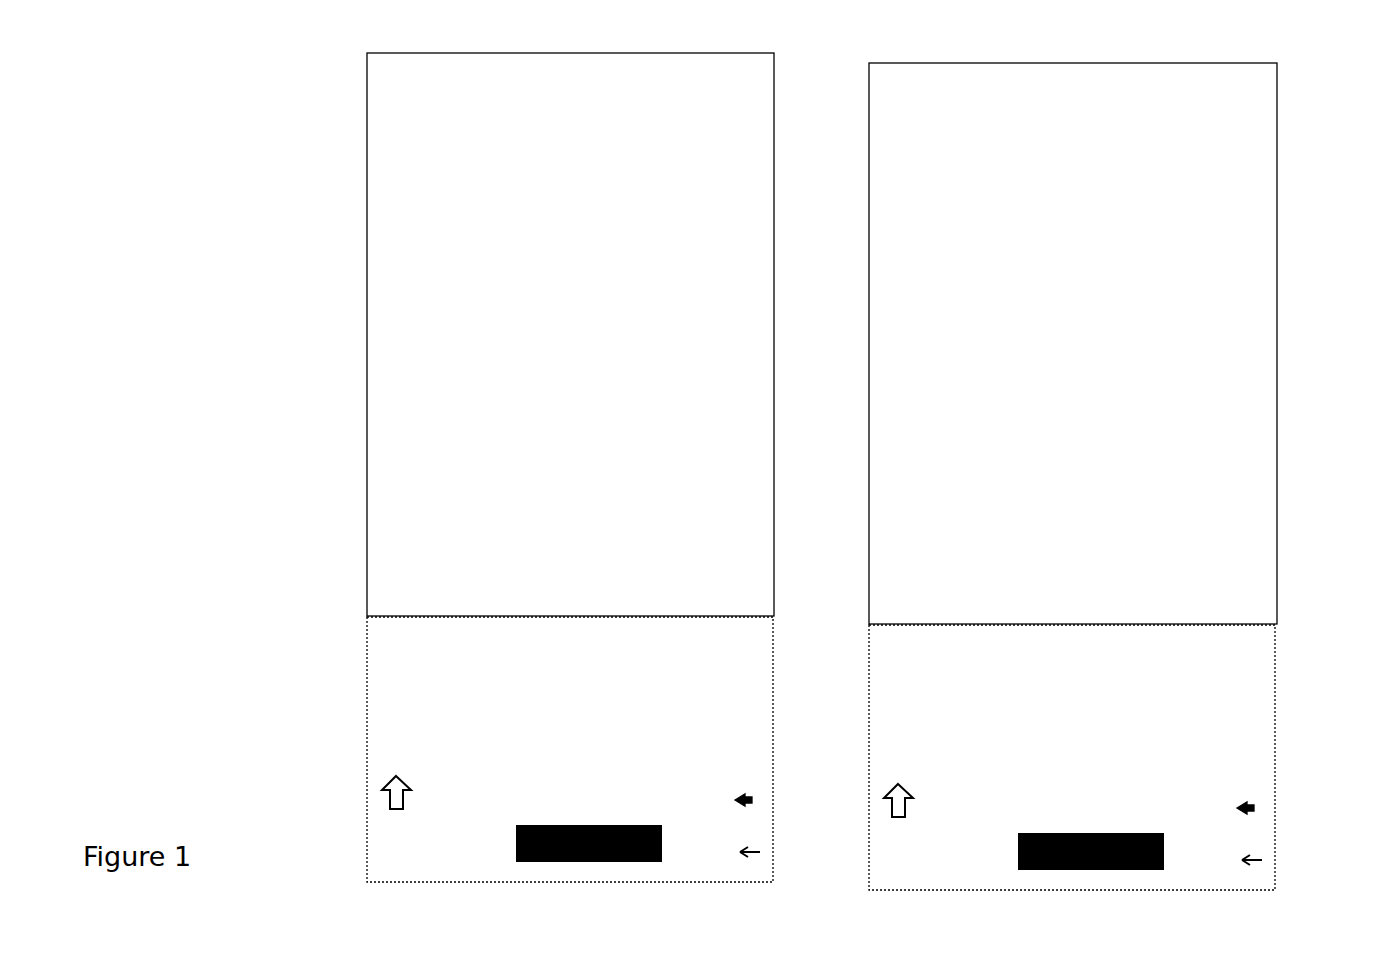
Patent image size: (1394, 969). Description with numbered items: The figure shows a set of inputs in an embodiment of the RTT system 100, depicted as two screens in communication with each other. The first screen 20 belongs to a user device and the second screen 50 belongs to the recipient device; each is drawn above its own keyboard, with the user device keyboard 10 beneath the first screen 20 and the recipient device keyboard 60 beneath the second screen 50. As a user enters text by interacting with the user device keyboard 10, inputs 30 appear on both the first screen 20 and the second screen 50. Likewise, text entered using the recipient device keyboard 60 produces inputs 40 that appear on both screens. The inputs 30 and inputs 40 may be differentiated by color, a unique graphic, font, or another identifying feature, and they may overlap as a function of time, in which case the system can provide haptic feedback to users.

The user device keyboard 10 is at (368, 738).
The first screen 20 is at (367, 362).
The inputs 30 is at (367, 565).
The inputs 40 is at (367, 577).
The second screen 50 is at (1278, 322).
The recipient device keyboard 60 is at (1278, 732).
The text messaging system 100 is at (783, 471).